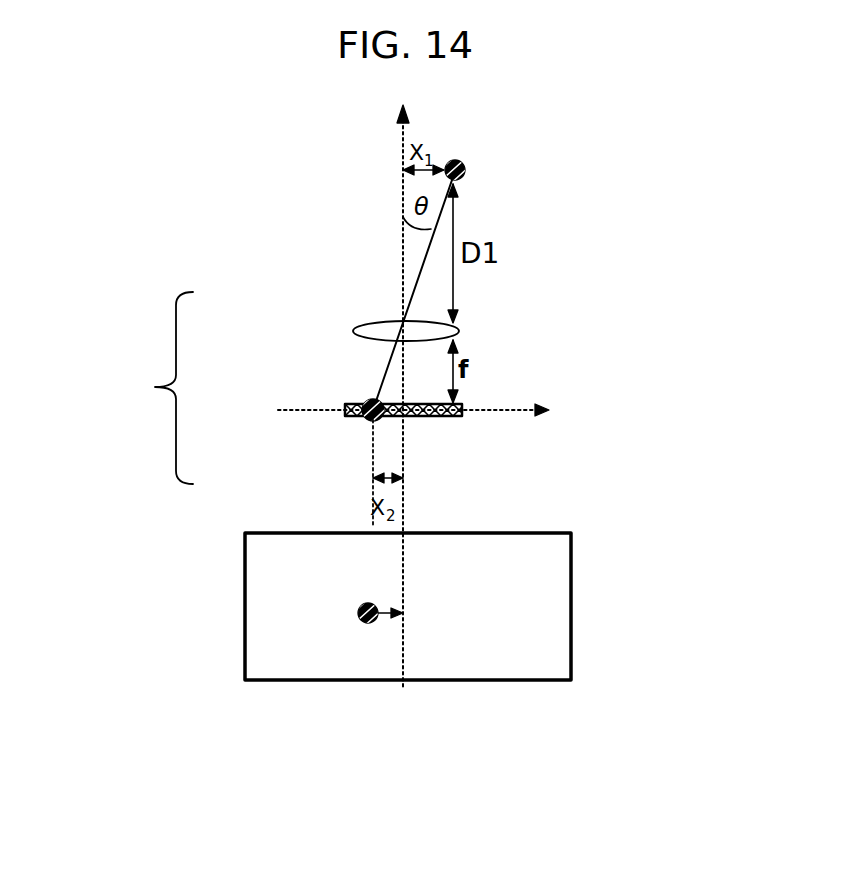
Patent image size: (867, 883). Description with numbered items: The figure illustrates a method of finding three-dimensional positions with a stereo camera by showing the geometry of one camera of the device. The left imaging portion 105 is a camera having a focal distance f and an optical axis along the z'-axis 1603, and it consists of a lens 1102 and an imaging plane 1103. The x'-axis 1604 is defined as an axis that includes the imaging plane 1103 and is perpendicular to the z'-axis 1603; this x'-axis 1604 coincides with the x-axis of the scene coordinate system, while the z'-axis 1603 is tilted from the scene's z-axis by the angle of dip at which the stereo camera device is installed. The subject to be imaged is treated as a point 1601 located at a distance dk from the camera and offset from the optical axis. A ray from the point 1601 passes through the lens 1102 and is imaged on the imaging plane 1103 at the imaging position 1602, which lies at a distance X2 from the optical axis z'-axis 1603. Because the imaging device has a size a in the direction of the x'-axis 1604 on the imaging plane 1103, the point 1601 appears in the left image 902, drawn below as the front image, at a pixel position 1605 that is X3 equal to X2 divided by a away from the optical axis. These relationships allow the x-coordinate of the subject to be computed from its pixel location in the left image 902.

The z'-axis 1603 is at (362, 116).
The point 1601 is at (465, 172).
The lens 1102 is at (356, 331).
The left imaging portion 105 is at (114, 388).
The x'-axis 1604 is at (584, 410).
The imaging plane 1103 is at (346, 414).
The imaging position of the point 1602 is at (370, 424).
The left image 902 is at (573, 549).
The pixel position 1605 is at (357, 614).